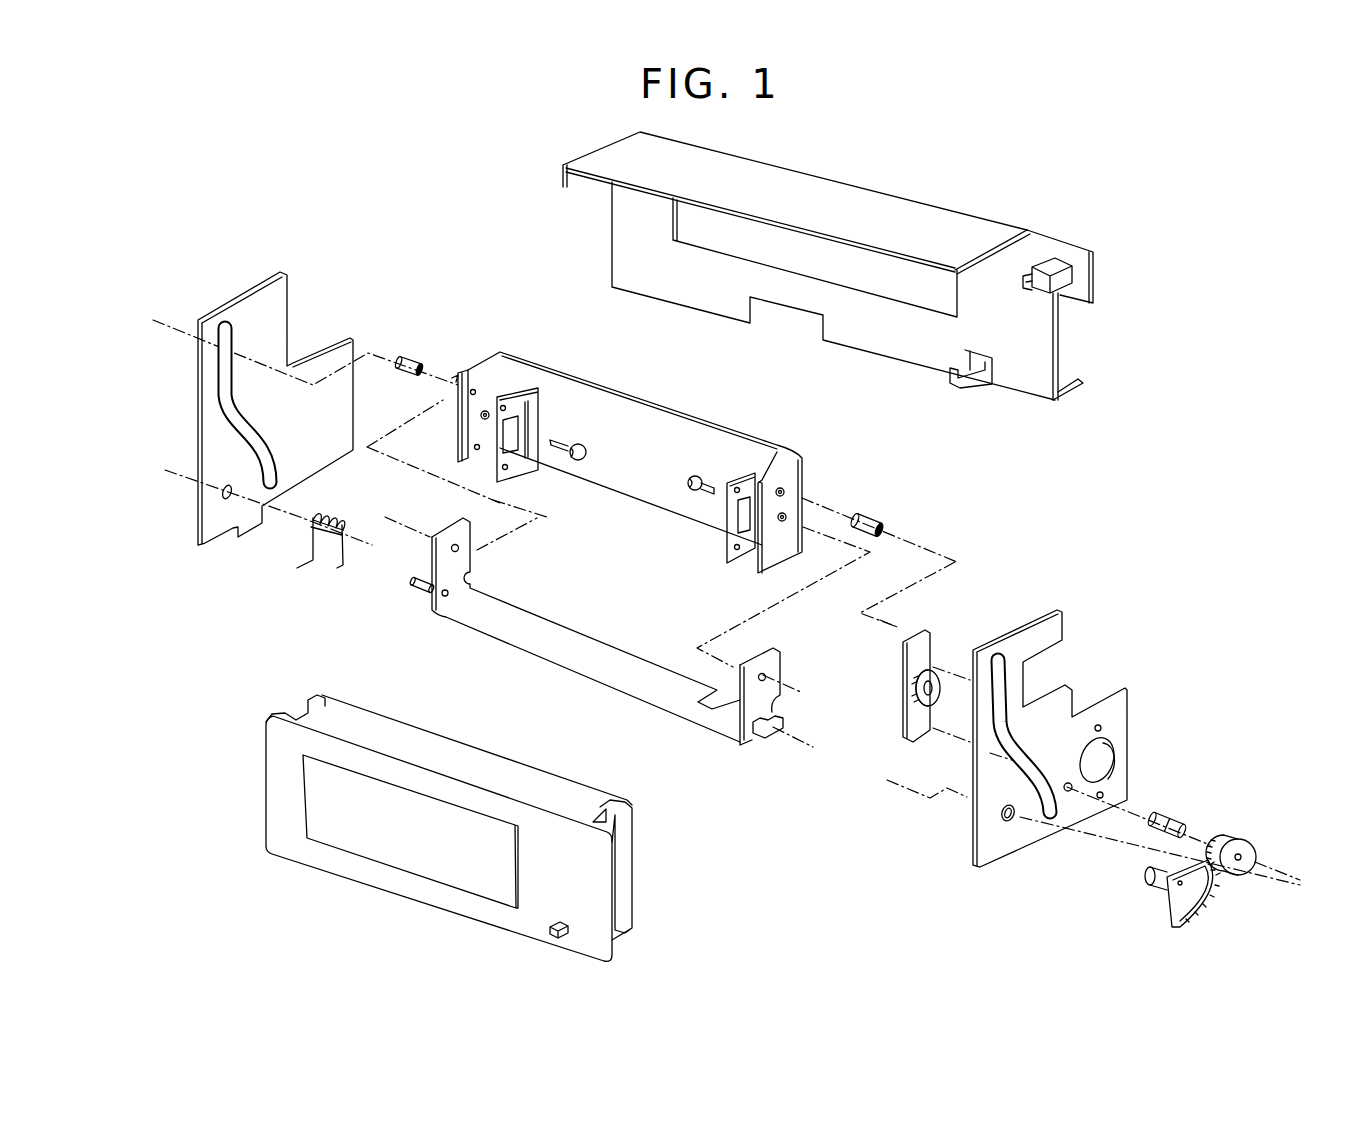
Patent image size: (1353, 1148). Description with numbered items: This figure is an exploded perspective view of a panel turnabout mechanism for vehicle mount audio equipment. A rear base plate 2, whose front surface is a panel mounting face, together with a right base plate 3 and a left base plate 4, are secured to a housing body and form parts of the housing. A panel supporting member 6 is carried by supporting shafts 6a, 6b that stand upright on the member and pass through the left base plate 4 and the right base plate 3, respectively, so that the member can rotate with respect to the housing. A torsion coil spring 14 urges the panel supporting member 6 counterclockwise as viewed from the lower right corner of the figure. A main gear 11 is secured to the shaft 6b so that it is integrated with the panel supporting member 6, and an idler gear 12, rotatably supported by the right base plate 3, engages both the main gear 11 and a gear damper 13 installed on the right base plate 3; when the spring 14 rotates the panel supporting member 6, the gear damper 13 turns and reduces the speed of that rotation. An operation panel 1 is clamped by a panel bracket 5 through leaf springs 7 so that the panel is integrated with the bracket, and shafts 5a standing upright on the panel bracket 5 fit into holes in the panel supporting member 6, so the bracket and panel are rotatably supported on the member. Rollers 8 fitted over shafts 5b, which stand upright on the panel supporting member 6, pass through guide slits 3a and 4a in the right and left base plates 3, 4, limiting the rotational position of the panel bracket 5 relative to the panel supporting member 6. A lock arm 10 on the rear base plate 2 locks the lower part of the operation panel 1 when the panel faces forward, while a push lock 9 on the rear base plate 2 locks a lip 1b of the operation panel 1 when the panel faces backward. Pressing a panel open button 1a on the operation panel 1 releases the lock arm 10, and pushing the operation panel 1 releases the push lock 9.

The operation panel 1 is at (478, 760).
The panel open button 1a is at (545, 930).
The lip 1b is at (613, 880).
The rear base plate 2 is at (980, 233).
The right base plate 3 is at (1062, 616).
The guide slit 3a is at (1008, 697).
The left base plate 4 is at (280, 292).
The guide slit 4a is at (240, 350).
The panel bracket 5 is at (676, 415).
The shafts 5a is at (571, 443).
The shafts 5b is at (455, 375).
The panel supporting member 6 is at (716, 738).
The supporting shaft 6a is at (418, 591).
The supporting shaft 6b is at (768, 740).
The leaf springs 7 is at (528, 474).
The rollers 8 is at (405, 358).
The push lock 9 is at (1050, 257).
The lock arm 10 is at (972, 385).
The main gear 11 is at (1166, 900).
The idler gear 12 is at (1245, 836).
The gear damper 13 is at (926, 636).
The torsion coil spring 14 is at (338, 518).